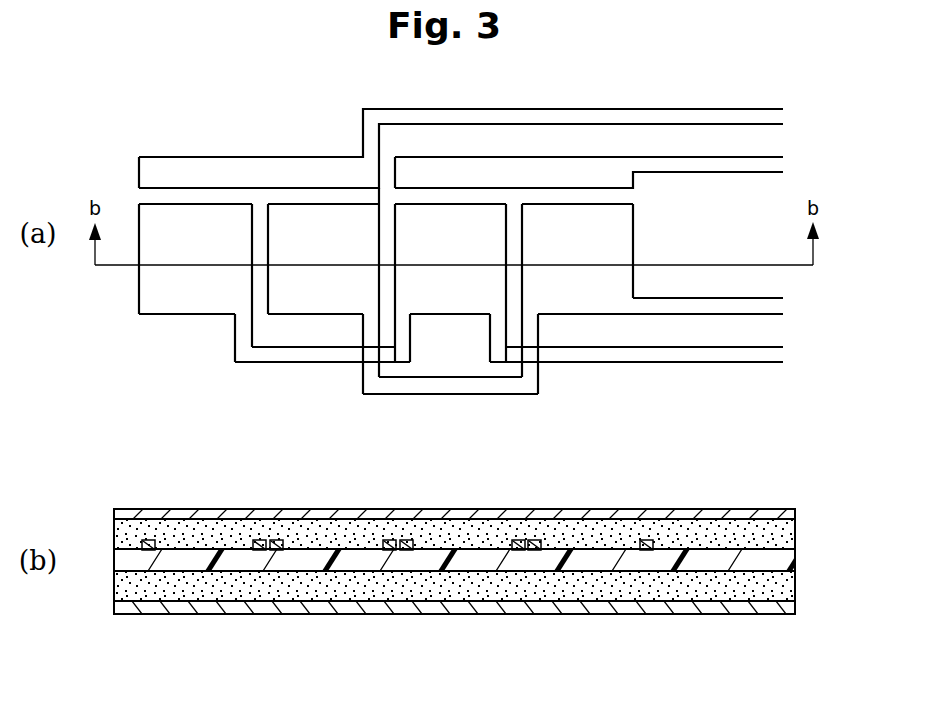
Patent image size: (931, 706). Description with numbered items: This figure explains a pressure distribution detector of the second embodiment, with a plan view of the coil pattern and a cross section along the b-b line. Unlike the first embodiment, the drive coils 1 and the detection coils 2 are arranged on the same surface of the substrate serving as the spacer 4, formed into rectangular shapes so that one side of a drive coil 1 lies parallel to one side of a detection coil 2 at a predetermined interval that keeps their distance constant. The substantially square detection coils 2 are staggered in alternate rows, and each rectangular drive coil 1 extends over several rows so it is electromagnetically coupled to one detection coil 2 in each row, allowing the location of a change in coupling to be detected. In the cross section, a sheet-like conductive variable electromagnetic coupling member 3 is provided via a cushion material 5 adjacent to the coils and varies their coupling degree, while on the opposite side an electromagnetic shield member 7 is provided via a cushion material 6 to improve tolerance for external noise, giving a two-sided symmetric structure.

The drive coil 1 is at (290, 156).
The detection coil 2 is at (188, 316).
The variable electromagnetic coupling member 3 is at (780, 515).
The spacer 4 is at (796, 558).
The cushion material 5 is at (795, 530).
The cushion material 6 is at (796, 588).
The electromagnetic shield member 7 is at (770, 606).